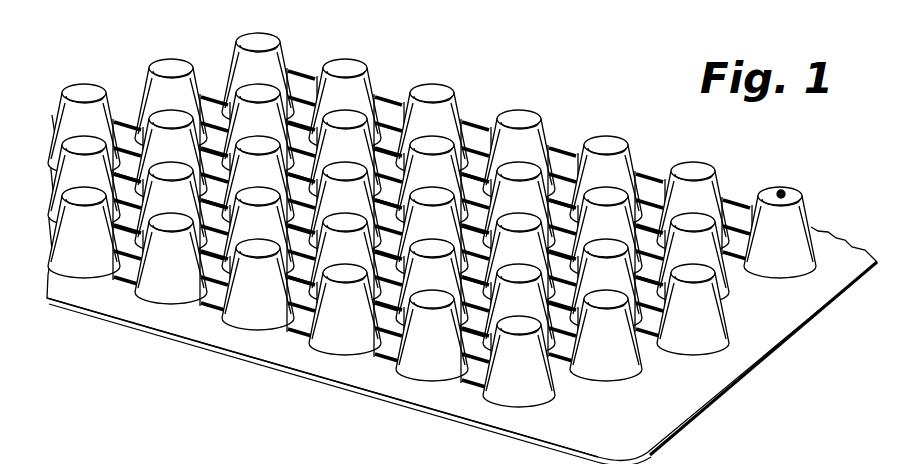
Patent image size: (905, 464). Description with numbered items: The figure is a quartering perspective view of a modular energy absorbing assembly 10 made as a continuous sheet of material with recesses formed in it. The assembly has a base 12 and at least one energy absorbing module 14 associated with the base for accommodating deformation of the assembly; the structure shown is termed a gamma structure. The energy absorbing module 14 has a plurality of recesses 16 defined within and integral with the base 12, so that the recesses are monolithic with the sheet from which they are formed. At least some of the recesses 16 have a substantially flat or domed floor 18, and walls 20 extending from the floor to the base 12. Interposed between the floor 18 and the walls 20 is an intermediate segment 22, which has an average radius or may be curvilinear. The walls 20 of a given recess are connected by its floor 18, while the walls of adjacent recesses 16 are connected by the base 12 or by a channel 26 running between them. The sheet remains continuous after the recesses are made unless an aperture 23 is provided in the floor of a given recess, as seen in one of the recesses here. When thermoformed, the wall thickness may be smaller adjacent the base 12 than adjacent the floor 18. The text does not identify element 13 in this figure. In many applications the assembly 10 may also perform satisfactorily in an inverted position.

The modular energy absorbing assembly 10 is at (462, 236).
The base 12 is at (715, 377).
The plate edge 13 is at (756, 460).
The energy absorbing module 14 is at (150, 337).
The recesses 16 is at (716, 461).
The floor 18 is at (260, 252).
The walls 20 is at (358, 330).
The intermediate segment 22 is at (522, 338).
The aperture 23 is at (785, 192).
The channel 26 is at (480, 132).